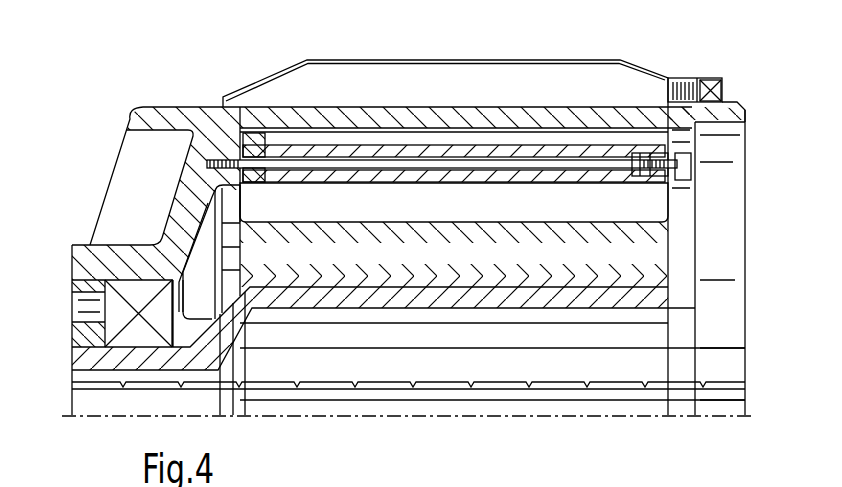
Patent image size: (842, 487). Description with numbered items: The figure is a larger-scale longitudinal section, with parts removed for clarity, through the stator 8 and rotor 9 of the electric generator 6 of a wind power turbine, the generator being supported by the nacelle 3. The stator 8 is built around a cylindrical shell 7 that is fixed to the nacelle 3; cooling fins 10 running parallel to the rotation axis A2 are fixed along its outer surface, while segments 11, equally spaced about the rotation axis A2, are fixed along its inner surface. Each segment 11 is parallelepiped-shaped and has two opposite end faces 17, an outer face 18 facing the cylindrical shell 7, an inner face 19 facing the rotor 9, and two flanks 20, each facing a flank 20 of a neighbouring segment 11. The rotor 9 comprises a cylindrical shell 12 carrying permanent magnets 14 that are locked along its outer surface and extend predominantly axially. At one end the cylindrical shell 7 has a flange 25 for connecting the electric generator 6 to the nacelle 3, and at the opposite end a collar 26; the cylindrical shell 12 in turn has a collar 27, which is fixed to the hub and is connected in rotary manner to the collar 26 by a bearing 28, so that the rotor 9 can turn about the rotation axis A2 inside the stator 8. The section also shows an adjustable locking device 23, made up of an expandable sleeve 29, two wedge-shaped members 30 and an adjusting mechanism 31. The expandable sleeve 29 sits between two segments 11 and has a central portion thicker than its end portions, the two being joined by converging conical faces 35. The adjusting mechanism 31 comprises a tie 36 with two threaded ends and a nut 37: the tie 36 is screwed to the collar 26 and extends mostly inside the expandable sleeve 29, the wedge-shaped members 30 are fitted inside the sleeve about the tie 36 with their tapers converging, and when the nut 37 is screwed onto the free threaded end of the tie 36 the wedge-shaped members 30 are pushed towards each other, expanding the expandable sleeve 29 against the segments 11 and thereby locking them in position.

The nacelle 3 is at (730, 112).
The electric generator 6 is at (296, 55).
The cylindrical shell 7 is at (540, 117).
The stator 8 is at (700, 155).
The rotor 9 is at (678, 263).
The cooling fins 10 is at (485, 87).
The segments 11 is at (743, 194).
The cylindrical shell 12 is at (647, 298).
The permanent magnets 14 is at (527, 277).
The end faces 17 is at (233, 197).
The outer face 18 is at (345, 122).
The inner face 19 is at (400, 222).
The flanks 20 is at (488, 137).
The adjustable locking device 23 is at (692, 175).
The flange 25 is at (677, 80).
The collar 26 is at (182, 238).
The collar 27 is at (195, 347).
The bearing 28 is at (100, 310).
The expandable sleeve 29 is at (377, 150).
The wedge-shaped members 30 is at (253, 157).
The adjusting mechanism 31 is at (363, 175).
The converging conical faces 35 is at (720, 102).
The tie 36 is at (333, 157).
The nut 37 is at (668, 187).
The rotation axis A2 is at (147, 417).